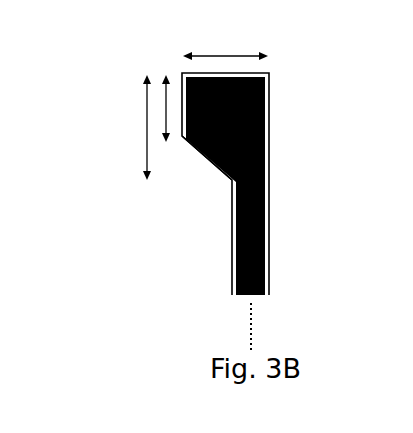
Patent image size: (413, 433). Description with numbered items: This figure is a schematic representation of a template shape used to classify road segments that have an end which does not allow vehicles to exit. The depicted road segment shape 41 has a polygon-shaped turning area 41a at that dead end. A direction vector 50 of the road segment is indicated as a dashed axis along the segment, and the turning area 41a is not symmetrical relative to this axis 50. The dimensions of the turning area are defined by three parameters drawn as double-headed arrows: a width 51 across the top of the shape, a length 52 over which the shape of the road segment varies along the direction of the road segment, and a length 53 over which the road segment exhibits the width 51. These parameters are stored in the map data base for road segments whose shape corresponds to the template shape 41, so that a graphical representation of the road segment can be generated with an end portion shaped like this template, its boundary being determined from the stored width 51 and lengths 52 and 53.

The road segment shape 41 is at (325, 97).
The polygon-shaped turning area 41a is at (205, 160).
The direction vector 50 is at (251, 336).
The width 51 is at (229, 56).
The length 52 is at (147, 158).
The length 53 is at (166, 110).